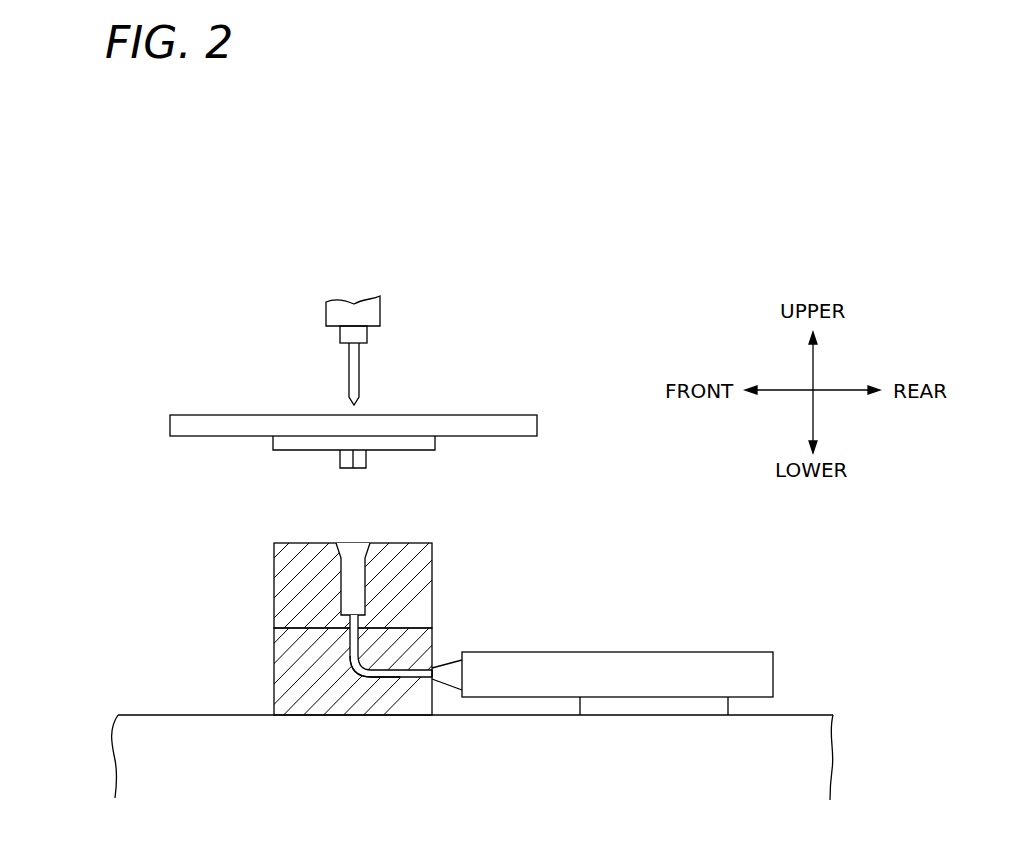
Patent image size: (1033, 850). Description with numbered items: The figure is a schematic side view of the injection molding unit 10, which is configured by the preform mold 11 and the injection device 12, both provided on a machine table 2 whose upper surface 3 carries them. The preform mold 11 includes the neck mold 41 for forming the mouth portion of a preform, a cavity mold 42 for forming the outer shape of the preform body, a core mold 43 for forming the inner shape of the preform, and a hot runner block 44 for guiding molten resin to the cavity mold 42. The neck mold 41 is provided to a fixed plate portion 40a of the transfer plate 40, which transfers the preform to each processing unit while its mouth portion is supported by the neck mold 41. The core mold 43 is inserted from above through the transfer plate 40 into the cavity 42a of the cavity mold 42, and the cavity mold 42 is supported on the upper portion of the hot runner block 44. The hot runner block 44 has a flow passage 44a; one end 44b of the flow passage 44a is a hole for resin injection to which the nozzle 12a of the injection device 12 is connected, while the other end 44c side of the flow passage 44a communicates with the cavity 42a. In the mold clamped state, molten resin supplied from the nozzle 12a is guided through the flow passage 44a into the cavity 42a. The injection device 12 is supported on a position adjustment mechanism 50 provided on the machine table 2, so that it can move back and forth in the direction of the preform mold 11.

The machine table 2 is at (817, 715).
The placement surface 3 is at (798, 752).
The injection molding unit 10 is at (98, 440).
The preform mold 11 is at (250, 605).
The injection device 12 is at (640, 652).
The nozzle 12a is at (445, 668).
The transfer plate 40 is at (508, 415).
The fixed plate portion 40a is at (273, 442).
The neck mold 41 is at (367, 461).
The cavity mold 42 is at (274, 572).
The cavity 42a is at (353, 582).
The core mold 43 is at (355, 373).
The hot runner block 44 is at (274, 668).
The flow passage 44a is at (361, 678).
The one end of the flow passage 44b is at (437, 678).
The other end of the flow passage 44c is at (350, 625).
The position adjustment mechanism 50 is at (662, 705).